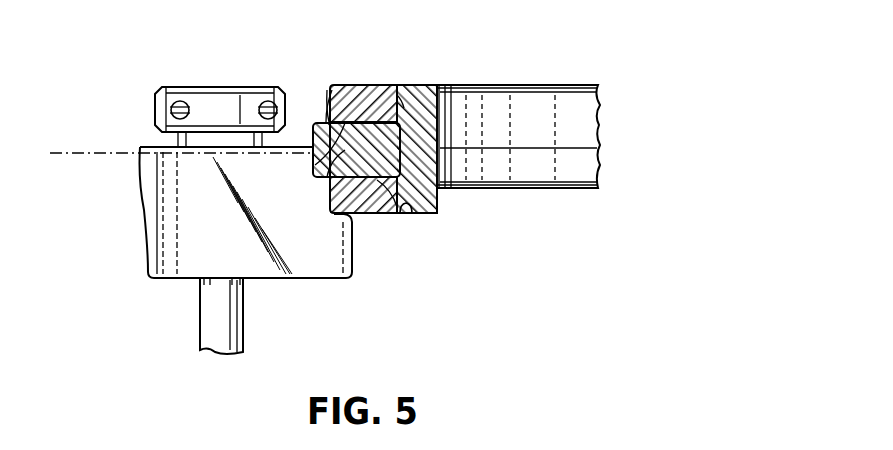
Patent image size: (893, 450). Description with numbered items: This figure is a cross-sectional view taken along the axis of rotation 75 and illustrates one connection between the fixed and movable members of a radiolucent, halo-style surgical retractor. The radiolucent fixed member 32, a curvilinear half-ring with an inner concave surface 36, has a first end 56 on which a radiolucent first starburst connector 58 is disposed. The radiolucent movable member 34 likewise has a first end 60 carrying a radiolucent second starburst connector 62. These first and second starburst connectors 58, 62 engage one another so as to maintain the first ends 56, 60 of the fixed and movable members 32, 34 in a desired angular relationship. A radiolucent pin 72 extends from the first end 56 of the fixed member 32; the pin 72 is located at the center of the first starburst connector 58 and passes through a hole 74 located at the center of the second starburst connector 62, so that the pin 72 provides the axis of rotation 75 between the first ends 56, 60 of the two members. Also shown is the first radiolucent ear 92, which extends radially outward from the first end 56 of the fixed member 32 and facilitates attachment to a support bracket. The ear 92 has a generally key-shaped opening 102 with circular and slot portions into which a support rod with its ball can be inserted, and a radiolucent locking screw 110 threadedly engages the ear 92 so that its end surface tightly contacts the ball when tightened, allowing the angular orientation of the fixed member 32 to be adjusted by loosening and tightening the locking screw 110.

The fixed member 32 is at (563, 88).
The movable member 34 is at (349, 86).
The inner concave surface 36 is at (546, 133).
The first end 56 is at (412, 88).
The first starburst connector 58 is at (397, 97).
The first end 60 is at (381, 206).
The second starburst connector 62 is at (409, 212).
The pin 72 is at (312, 125).
The hole 74 is at (318, 168).
The axis of rotation 75 is at (72, 154).
The first ear 92 is at (139, 174).
The key-shaped opening 102 is at (140, 244).
The locking screw 110 is at (186, 86).